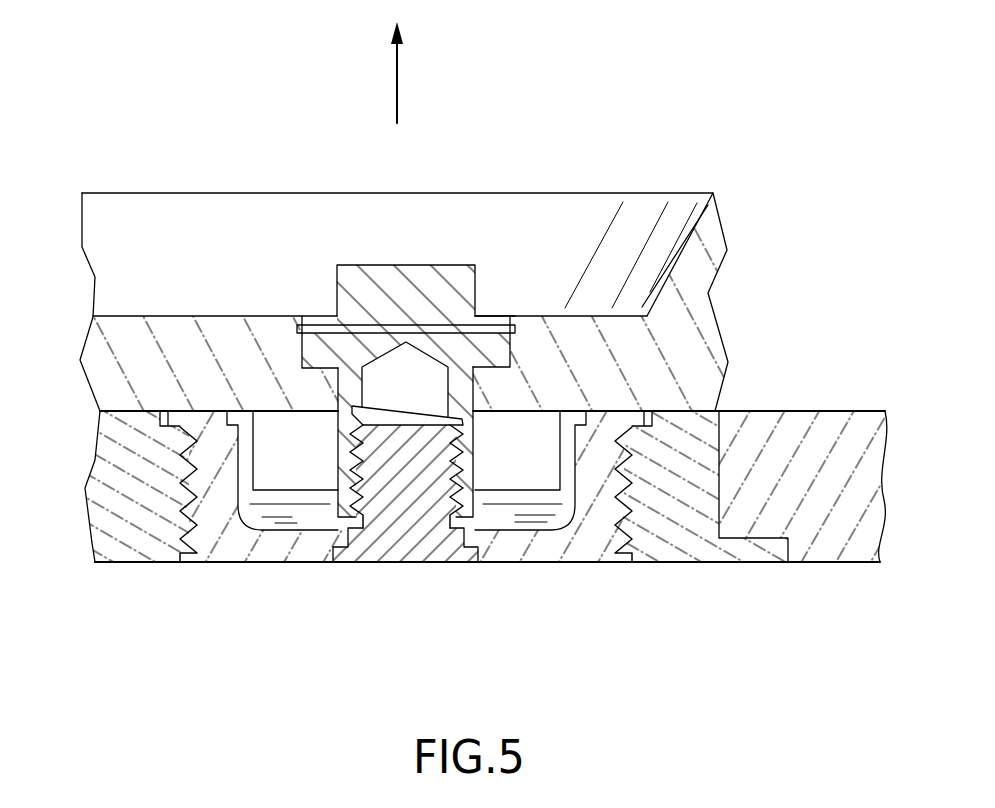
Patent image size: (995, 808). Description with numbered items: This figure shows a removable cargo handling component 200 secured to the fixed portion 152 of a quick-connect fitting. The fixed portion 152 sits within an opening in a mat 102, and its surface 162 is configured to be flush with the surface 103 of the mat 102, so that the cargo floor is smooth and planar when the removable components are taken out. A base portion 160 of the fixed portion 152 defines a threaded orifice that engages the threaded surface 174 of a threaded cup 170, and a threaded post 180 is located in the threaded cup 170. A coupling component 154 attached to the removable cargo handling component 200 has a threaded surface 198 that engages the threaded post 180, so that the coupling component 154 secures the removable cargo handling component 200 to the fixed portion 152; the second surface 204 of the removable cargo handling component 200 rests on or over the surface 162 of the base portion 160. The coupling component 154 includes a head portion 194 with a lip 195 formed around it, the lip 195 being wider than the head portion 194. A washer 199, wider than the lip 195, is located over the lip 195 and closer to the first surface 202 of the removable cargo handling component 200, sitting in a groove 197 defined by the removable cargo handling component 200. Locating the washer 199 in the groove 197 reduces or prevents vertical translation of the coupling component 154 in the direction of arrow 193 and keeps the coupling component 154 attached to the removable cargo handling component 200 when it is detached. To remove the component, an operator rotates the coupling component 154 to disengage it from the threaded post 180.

The mat 102 is at (803, 488).
The surface of mat 103 is at (858, 410).
The fixed portion 152 is at (113, 515).
The coupling component 154 is at (425, 311).
The base portion 160 is at (717, 485).
The surface of fixed portion 162 is at (669, 410).
The threaded cup 170 is at (230, 533).
The threaded surface 174 is at (174, 528).
The threaded post 180 is at (441, 541).
The arrow 193 is at (398, 88).
The head portion 194 is at (412, 287).
The lip 195 is at (300, 352).
The groove 197 is at (519, 312).
The threaded surface 198 is at (443, 495).
The washer 199 is at (504, 330).
The removable cargo handling component 200 is at (683, 333).
The first surface 202 is at (122, 315).
The second surface 204 is at (137, 413).